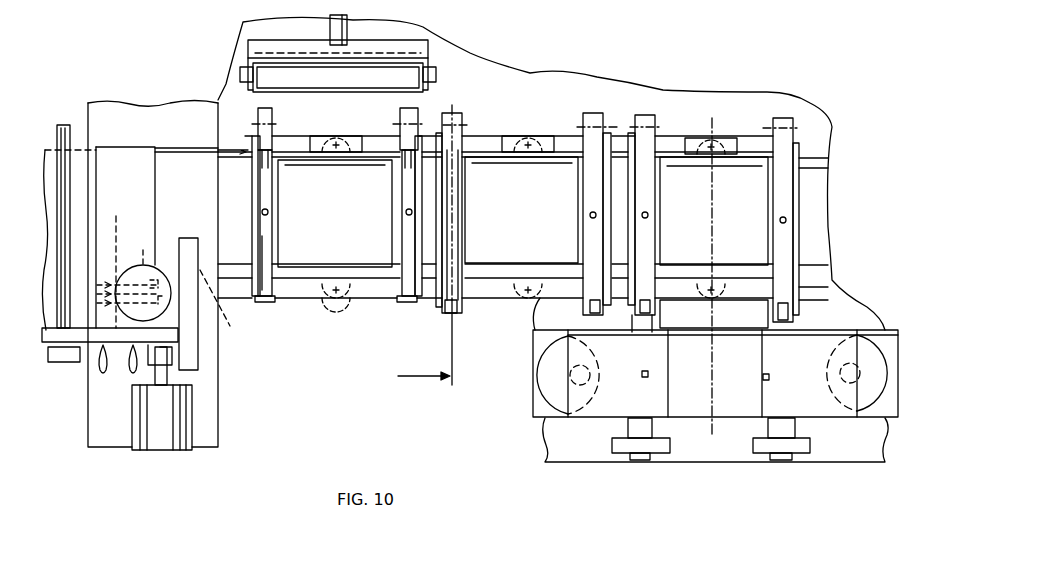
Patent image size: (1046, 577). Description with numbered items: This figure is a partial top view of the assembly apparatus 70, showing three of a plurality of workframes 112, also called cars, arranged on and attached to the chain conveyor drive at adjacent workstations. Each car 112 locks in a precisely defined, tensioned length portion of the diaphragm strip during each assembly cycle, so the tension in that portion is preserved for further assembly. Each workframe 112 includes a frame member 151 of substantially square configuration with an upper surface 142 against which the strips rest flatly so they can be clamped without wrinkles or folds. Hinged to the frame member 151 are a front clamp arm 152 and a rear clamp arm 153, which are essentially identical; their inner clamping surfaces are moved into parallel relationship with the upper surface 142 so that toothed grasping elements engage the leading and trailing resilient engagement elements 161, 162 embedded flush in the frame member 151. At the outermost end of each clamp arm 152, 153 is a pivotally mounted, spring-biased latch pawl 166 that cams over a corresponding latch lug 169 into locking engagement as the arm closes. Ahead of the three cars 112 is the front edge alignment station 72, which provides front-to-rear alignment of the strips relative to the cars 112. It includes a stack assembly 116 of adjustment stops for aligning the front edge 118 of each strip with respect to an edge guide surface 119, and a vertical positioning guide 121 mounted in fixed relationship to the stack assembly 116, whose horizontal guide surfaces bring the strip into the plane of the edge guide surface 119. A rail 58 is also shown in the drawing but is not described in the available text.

The front edge alignment station 72 is at (104, 114).
The vertical positioning guide 121 is at (56, 158).
The rear clamp arm 153 is at (256, 112).
The rail 58 is at (197, 148).
The edge guide surface 119 is at (128, 262).
The stack assembly 116 is at (138, 242).
The workframe 112 is at (281, 136).
The front clamp arm 152 is at (400, 118).
The latch pawl 166 is at (420, 110).
The assembly apparatus 70 is at (537, 89).
The trailing resilient engagement element 162 is at (272, 186).
The leading resilient engagement element 161 is at (402, 204).
The upper surface 142 is at (268, 243).
The front edge 118 is at (233, 307).
The latch lug 169 is at (262, 302).
The frame member 151 is at (345, 300).